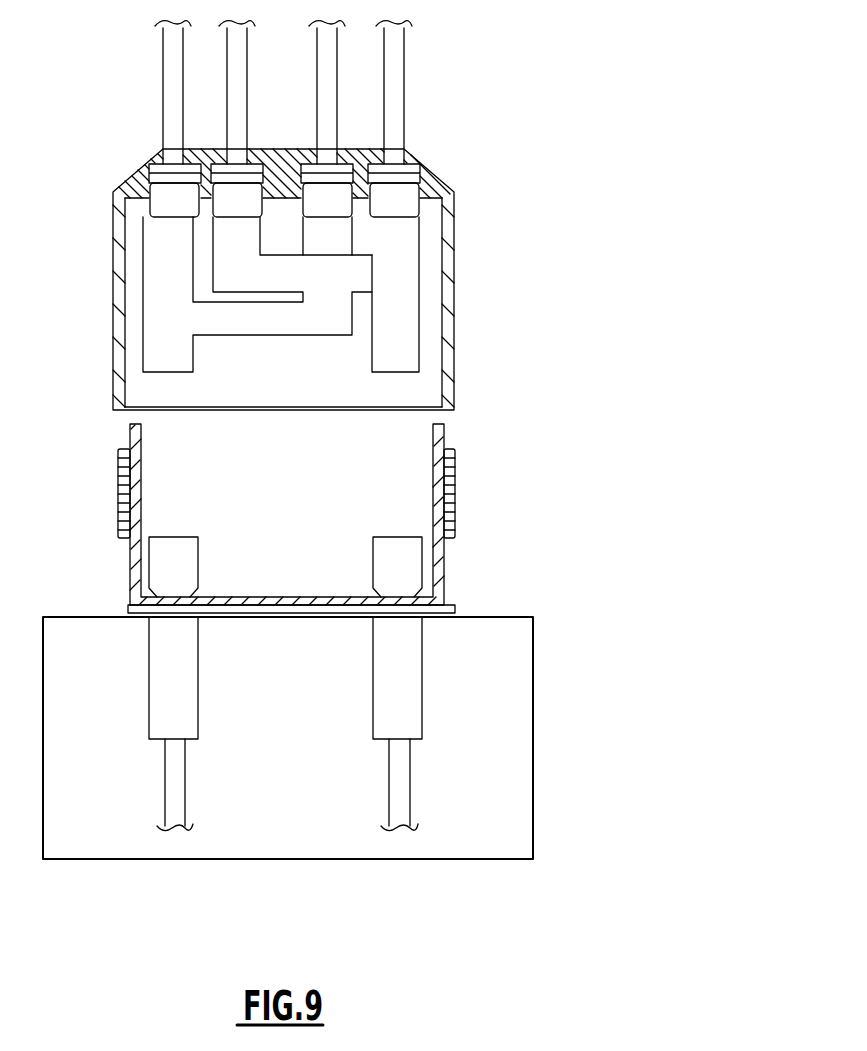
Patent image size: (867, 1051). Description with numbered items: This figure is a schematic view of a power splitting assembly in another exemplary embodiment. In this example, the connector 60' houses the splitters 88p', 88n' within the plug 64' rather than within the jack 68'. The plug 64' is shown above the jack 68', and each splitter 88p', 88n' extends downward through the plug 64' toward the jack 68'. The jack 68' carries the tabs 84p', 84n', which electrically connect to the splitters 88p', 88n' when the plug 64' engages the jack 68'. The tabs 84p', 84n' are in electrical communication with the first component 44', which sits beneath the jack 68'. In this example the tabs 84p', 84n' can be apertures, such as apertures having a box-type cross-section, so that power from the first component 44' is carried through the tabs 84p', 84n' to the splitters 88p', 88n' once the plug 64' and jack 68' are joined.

The connector 60' is at (428, 317).
The plug 64' is at (328, 279).
The splitter 88p' is at (257, 298).
The splitter 88n' is at (406, 299).
The jack 68' is at (335, 518).
The tab 84p' is at (222, 567).
The tab 84n' is at (463, 551).
The first component 44' is at (288, 775).